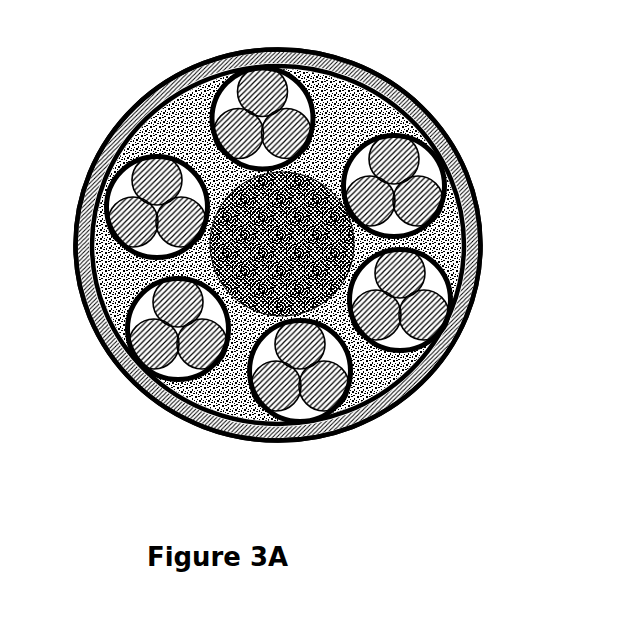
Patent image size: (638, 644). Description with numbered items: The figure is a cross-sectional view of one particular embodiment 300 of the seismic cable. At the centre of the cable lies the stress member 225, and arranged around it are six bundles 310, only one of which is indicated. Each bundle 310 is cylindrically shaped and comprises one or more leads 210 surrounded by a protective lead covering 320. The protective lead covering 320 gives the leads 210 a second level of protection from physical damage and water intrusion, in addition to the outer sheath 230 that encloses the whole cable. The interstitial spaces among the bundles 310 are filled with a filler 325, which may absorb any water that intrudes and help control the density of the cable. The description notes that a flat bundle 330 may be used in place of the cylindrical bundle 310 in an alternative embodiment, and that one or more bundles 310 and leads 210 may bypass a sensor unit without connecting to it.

The embodiment of the seismic cable 300 is at (150, 13).
The lead 210 is at (472, 180).
The stress member 225 is at (379, 73).
The sheath 230 is at (455, 347).
The bundle 310 is at (458, 234).
The protective lead covering 320 is at (390, 412).
The filler 325 is at (413, 95).
The flat bundle 330 is at (457, 147).